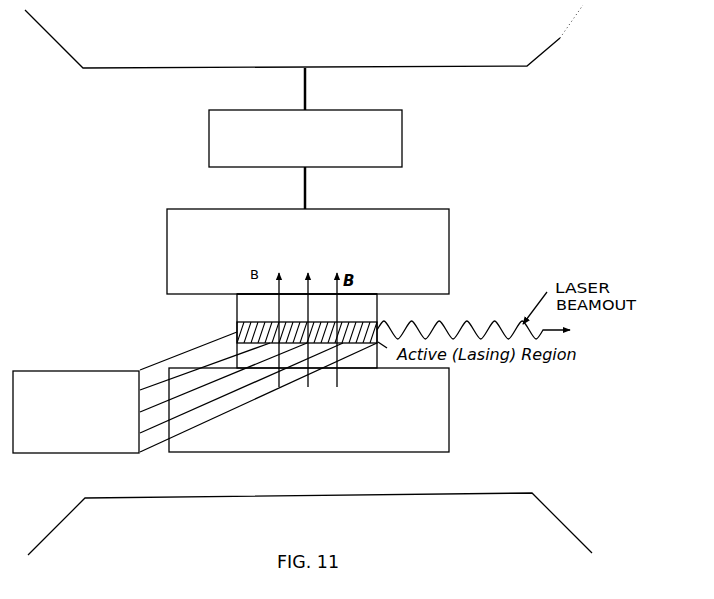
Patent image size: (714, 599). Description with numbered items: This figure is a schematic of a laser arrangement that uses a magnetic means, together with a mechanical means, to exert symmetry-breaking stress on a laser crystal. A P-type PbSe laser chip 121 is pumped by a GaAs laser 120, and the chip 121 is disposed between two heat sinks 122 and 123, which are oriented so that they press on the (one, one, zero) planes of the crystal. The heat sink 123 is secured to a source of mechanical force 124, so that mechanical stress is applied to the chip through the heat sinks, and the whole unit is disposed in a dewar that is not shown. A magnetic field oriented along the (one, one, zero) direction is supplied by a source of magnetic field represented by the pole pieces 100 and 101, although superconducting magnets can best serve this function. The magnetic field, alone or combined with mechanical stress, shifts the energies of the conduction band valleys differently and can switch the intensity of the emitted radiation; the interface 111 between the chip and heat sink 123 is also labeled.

The pole piece 100 is at (563, 530).
The pole piece 101 is at (562, 31).
The interface between heat sink and semiconductor body 111 is at (335, 288).
The GaAs laser 120 is at (78, 453).
The P-type PbSe laser chip 121 is at (256, 310).
The heat sink 122 is at (433, 415).
The heat sink 123 is at (435, 230).
The source of mechanical force 124 is at (393, 133).